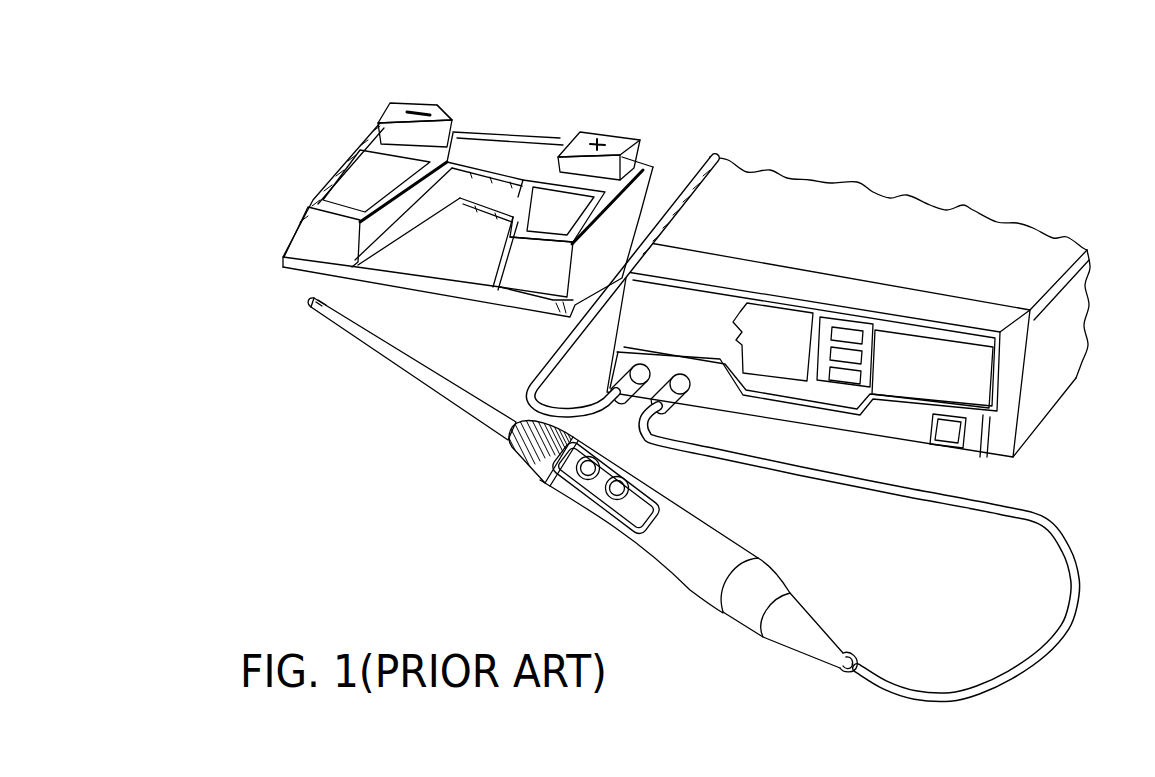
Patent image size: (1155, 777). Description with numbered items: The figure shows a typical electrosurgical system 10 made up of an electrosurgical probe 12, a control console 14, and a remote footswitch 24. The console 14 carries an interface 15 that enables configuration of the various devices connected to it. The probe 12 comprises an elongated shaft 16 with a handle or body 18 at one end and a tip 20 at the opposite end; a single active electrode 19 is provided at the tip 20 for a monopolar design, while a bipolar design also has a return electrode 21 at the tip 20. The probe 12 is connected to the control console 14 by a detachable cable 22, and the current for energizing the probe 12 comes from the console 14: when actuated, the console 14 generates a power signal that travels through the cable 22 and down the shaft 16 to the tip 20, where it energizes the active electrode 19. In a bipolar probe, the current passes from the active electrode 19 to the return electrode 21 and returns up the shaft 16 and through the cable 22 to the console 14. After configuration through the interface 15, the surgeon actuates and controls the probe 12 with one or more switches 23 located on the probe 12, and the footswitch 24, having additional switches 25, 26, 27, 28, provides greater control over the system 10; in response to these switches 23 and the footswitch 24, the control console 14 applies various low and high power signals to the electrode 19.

The electrosurgical system 10 is at (990, 152).
The electrosurgical probe 12 is at (539, 495).
The control console 14 is at (1068, 400).
The interface 15 is at (736, 313).
The elongated shaft 16 is at (405, 362).
The handle or body 18 is at (700, 610).
The active electrode 19 is at (307, 300).
The tip 20 is at (298, 291).
The return electrode 21 is at (308, 306).
The detachable cable 22 is at (1072, 548).
The switches 23 is at (588, 464).
The footswitch 24 is at (348, 147).
The switch 25 is at (362, 190).
The switch 26 is at (560, 207).
The switch 27 is at (411, 103).
The switch 28 is at (595, 132).